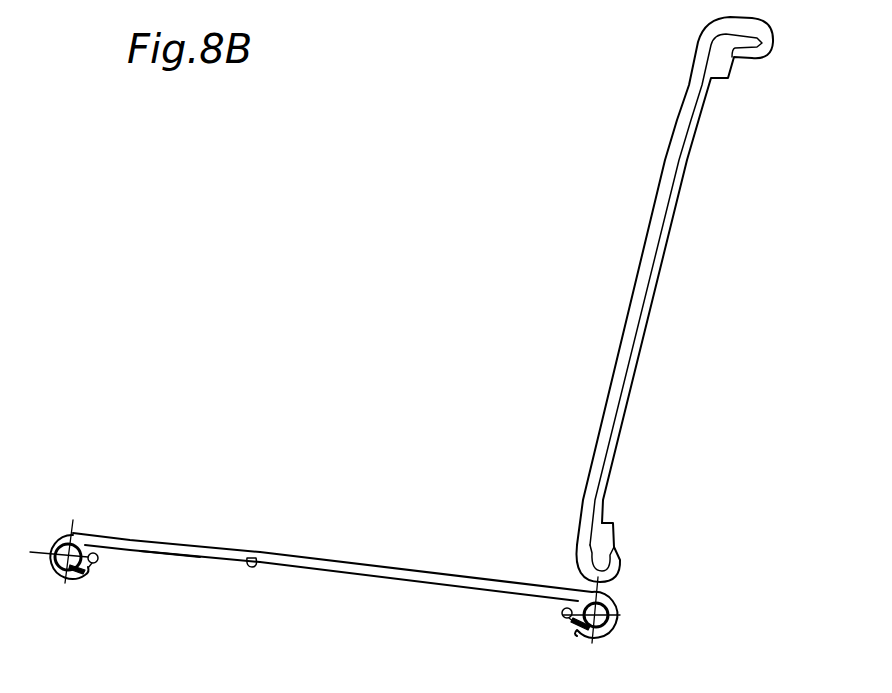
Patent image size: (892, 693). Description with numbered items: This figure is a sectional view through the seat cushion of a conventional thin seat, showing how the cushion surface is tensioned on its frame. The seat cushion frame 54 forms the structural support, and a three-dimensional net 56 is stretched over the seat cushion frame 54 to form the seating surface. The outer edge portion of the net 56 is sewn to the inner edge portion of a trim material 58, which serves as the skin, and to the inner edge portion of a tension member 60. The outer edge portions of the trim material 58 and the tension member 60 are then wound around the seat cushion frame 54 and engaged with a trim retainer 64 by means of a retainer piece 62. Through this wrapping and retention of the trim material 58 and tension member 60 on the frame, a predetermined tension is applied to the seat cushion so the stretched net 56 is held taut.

The seat cushion frame 54 is at (80, 533).
The 3-D net 56 is at (393, 568).
The trim material 58 is at (130, 539).
The tension member 60 is at (167, 553).
The retainer piece 62 is at (83, 575).
The trim retainer 64 is at (97, 563).